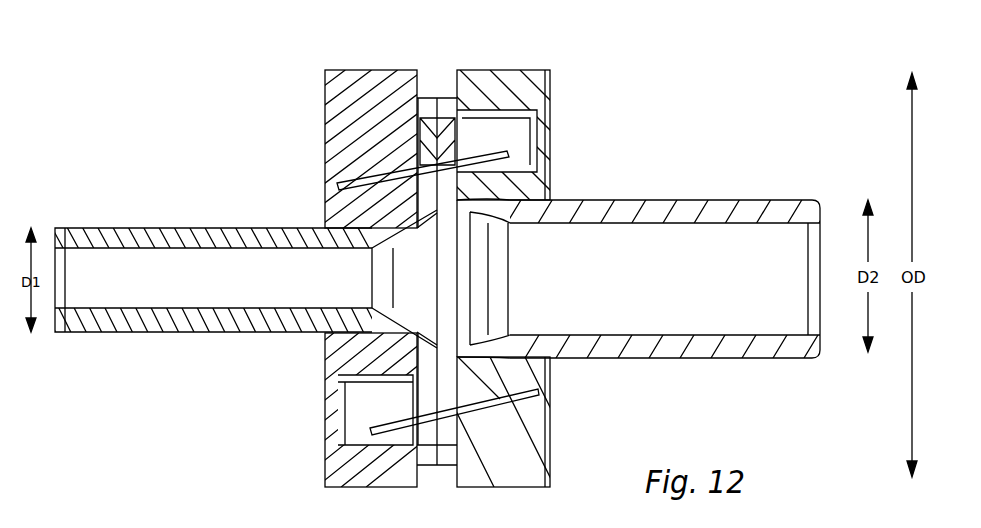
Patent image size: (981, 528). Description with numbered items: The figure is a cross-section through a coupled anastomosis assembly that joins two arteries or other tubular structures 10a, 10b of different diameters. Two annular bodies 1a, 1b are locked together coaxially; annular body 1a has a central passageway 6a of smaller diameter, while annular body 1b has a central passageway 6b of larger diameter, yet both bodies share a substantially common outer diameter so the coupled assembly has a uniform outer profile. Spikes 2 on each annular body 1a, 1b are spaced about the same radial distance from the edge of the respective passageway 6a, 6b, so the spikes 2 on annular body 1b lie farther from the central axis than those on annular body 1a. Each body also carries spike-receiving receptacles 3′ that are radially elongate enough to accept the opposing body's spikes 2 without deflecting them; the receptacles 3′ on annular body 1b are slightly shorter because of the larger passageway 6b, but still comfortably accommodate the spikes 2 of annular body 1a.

The annular body 1a is at (347, 98).
The annular body 1b is at (541, 93).
The spike 2 is at (485, 153).
The spike-receiving receptacle 3′ is at (523, 150).
The passageway 6a is at (345, 226).
The passageway 6b is at (542, 194).
The tubular structure 10a is at (133, 317).
The tubular structure 10b is at (700, 337).